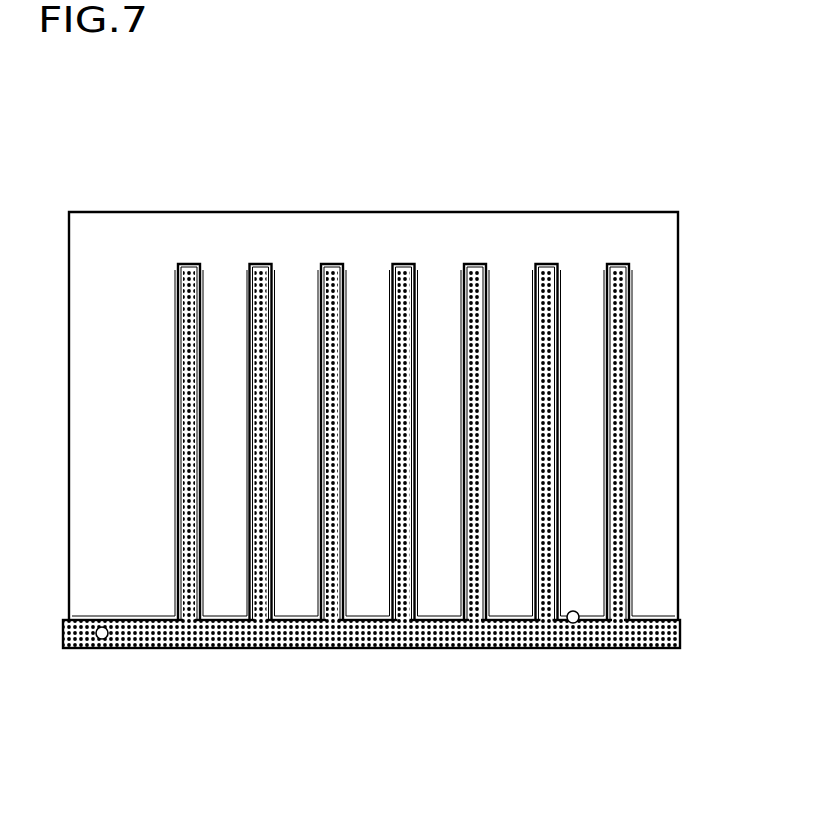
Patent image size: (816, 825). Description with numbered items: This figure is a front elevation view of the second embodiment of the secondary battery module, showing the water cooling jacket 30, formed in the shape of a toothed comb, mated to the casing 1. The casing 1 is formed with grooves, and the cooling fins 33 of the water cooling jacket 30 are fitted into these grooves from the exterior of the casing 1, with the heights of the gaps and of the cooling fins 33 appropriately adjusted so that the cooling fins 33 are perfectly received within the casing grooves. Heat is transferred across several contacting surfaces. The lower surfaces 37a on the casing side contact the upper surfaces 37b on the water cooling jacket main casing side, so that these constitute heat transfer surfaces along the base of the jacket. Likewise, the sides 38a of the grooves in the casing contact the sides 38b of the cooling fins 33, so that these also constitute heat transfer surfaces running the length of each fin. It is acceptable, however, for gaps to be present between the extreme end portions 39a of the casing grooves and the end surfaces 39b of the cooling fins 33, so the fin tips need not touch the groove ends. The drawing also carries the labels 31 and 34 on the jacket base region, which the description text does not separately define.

The casing 1 is at (69, 233).
The water cooling jacket 30 is at (160, 635).
The base plate surface 31 is at (410, 640).
The cooling fins 33 is at (179, 418).
The inlet port 34 is at (96, 633).
The lower surfaces on the casing side 37a is at (585, 616).
The upper surfaces on the water cooling jacket main casing side 37b is at (574, 626).
The sides of the grooves in the casing 38a is at (629, 378).
The sides of the cooling fins 38b is at (608, 377).
The extreme end portions of the casing grooves 39a is at (402, 266).
The end surfaces of the cooling fins 39b is at (405, 266).